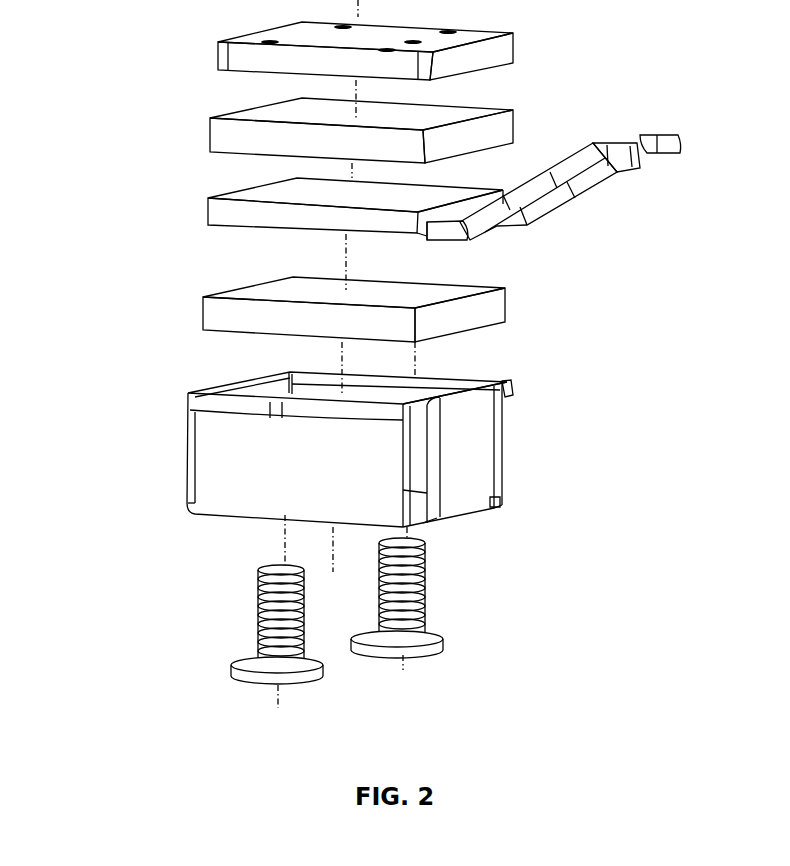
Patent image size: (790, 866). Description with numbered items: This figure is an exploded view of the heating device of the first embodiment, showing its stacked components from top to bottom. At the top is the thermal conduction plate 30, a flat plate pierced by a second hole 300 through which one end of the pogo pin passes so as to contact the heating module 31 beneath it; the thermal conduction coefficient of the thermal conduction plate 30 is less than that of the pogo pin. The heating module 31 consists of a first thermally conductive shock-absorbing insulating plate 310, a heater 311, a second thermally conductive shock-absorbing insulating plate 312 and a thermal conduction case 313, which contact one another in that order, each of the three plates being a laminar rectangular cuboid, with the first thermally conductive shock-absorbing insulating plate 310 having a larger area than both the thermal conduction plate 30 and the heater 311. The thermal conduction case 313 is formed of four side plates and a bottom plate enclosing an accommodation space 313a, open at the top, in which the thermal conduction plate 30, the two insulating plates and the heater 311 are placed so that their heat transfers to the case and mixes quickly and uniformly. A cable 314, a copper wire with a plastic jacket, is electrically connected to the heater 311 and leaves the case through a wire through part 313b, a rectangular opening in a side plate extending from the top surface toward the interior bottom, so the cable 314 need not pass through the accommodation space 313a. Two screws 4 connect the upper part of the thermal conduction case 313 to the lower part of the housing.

The thermal conduction plate 30 is at (361, 47).
The second hole 300 is at (250, 33).
The heating module 31 is at (83, 150).
The first thermally conductive shock-absorbing insulating plate 310 is at (482, 133).
The heater 311 is at (368, 222).
The second thermally conductive shock-absorbing insulating plate 312 is at (460, 312).
The thermal conduction case 313 is at (368, 417).
The accommodation space 313a is at (310, 390).
The wire through part 313b is at (502, 433).
The cable 314 is at (540, 208).
The screw 4 is at (423, 587).